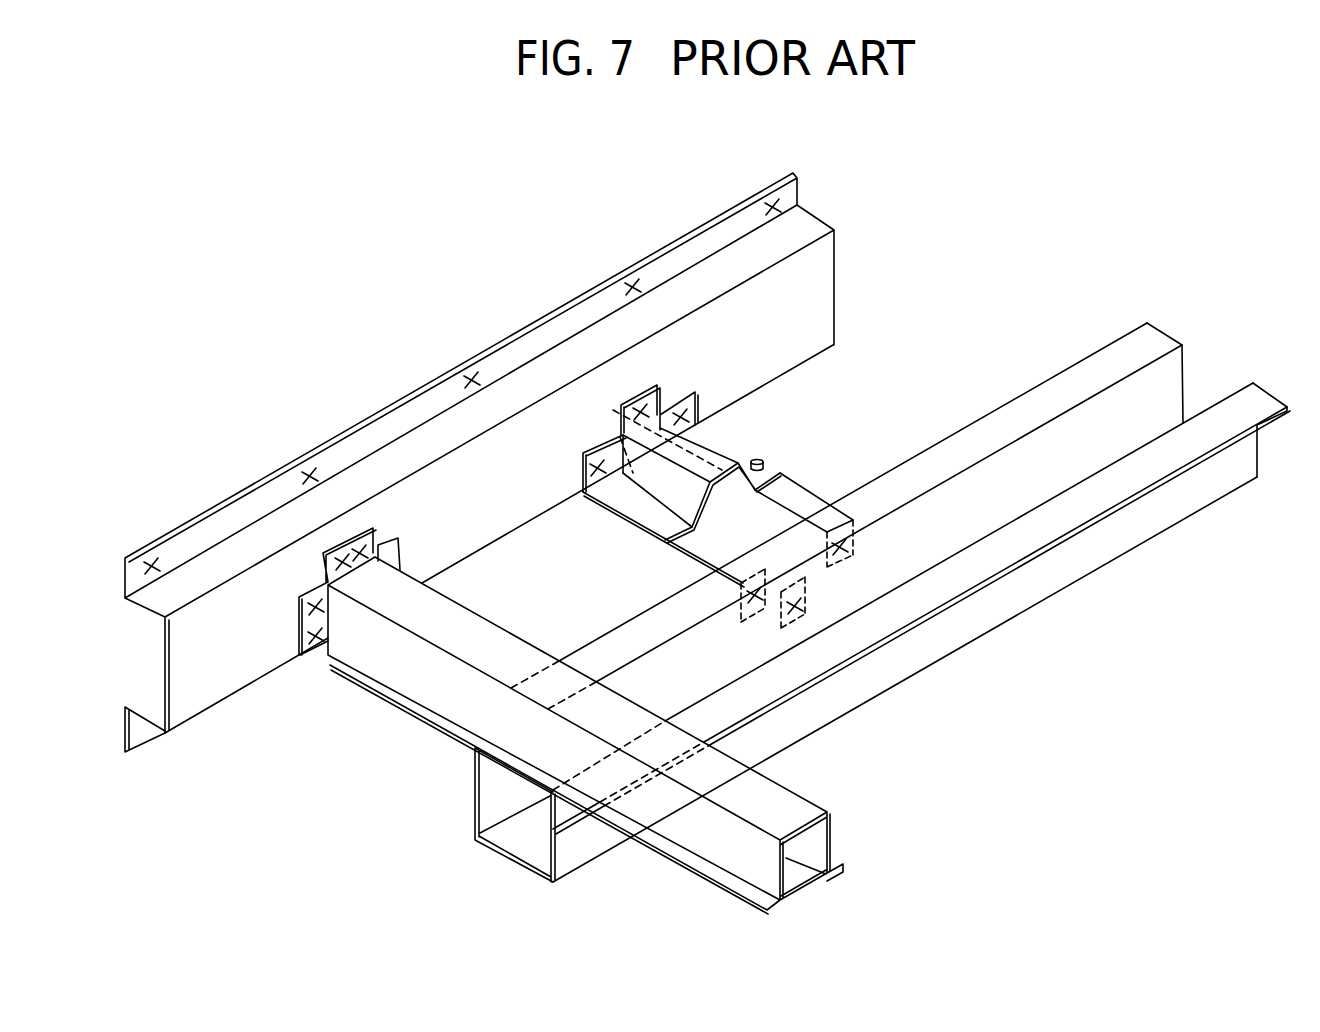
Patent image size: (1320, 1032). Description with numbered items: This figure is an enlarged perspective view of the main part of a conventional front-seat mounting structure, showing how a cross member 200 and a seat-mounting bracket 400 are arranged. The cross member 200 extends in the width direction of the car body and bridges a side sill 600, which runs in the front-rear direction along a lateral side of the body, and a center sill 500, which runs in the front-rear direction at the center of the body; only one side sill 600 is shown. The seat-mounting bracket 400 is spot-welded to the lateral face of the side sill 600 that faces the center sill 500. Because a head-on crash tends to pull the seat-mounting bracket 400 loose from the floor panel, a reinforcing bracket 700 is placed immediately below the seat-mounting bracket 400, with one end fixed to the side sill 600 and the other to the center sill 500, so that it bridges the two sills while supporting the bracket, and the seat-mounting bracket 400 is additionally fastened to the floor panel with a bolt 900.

The cross member 200 is at (403, 655).
The seat-mounting bracket 400 is at (662, 522).
The center sill 500 is at (853, 678).
The side sill 600 is at (283, 520).
The reinforcing bracket 700 is at (790, 505).
The bolt 900 is at (760, 465).